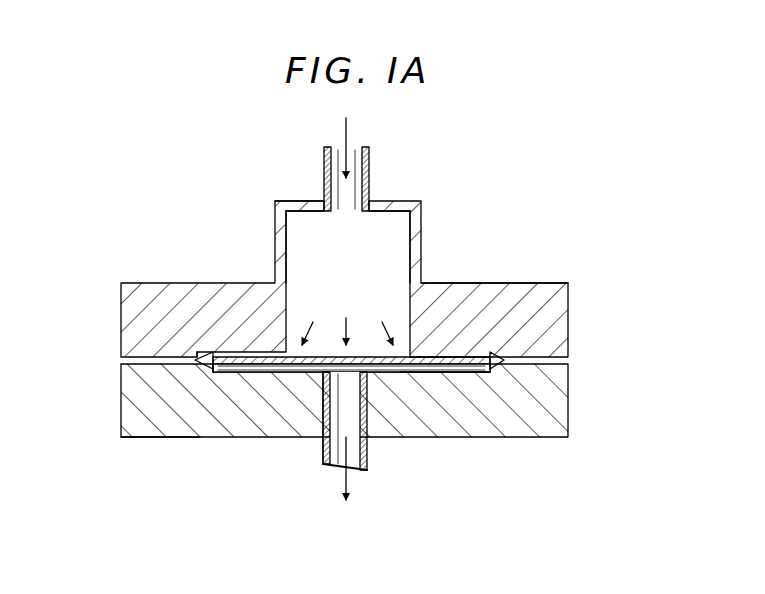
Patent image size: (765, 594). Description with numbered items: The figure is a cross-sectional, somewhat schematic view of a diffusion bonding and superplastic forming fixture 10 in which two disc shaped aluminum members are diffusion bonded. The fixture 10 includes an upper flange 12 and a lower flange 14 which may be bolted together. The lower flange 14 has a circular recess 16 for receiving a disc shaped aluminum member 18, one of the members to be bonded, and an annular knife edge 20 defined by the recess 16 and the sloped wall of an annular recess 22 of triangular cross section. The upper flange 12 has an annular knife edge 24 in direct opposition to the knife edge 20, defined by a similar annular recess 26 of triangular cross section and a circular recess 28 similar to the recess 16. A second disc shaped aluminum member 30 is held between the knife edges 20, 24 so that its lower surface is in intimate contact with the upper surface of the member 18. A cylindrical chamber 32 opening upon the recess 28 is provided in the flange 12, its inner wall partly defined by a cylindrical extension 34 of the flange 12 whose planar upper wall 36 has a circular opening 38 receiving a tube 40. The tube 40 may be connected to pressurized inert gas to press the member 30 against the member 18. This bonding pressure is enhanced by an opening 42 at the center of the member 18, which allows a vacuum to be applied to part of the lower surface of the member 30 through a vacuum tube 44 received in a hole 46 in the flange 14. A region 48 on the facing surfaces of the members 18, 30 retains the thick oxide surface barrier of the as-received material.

The fixture 10 is at (100, 370).
The upper flange 12 is at (546, 292).
The lower flange 14 is at (557, 408).
The circular recess 16 is at (492, 372).
The disc shaped aluminum member 18 is at (267, 373).
The annular knife edge 20 is at (208, 373).
The annular recess 22 is at (184, 424).
The annular knife edge 24 is at (208, 355).
The annular recess 26 is at (210, 358).
The circular recess 28 is at (268, 356).
The disc shaped aluminum member 30 is at (455, 346).
The cylindrical chamber 32 is at (363, 303).
The cylindrical extension 34 is at (423, 224).
The planar upper wall 36 is at (303, 201).
The circular opening 38 is at (313, 213).
The tube 40 is at (371, 167).
The opening 42 is at (366, 432).
The vacuum tube 44 is at (368, 465).
The hole 46 is at (324, 412).
The region 48 is at (400, 375).